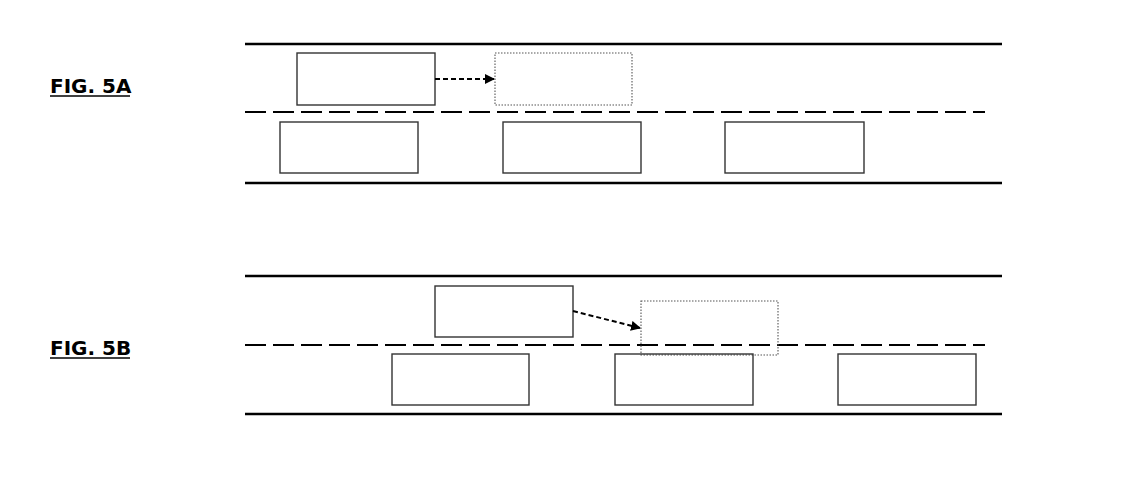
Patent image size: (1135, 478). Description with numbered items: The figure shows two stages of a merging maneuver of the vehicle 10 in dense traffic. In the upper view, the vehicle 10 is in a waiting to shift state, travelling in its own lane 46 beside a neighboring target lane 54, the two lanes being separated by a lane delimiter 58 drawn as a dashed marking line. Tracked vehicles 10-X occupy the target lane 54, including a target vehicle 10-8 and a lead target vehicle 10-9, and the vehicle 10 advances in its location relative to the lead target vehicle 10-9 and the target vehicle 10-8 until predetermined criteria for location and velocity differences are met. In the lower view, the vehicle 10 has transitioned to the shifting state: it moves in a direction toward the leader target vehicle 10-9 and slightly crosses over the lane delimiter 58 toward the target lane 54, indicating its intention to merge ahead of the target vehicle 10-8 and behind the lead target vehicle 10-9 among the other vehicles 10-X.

In FIG. 5A, the vehicle 10 is at (297, 78).
In FIG. 5B, the vehicle 10 is at (435, 286).
In FIG. 5A, the target vehicle 10-8 is at (280, 147).
In FIG. 5B, the target vehicle 10-8 is at (392, 385).
In FIG. 5A, the lead target vehicle 10-9 is at (503, 147).
In FIG. 5B, the lead target vehicle 10-9 is at (615, 378).
In FIG. 5A, the vehicles 10-X is at (725, 147).
In FIG. 5B, the vehicles 10-X is at (838, 380).
In FIG. 5A, the ego lane 46 is at (932, 79).
In FIG. 5B, the ego lane 46 is at (923, 311).
In FIG. 5A, the target lane 54 is at (975, 147).
In FIG. 5B, the target lane 54 is at (1000, 380).
In FIG. 5A, the lane delimiter 58 is at (985, 112).
In FIG. 5B, the lane delimiter 58 is at (985, 345).